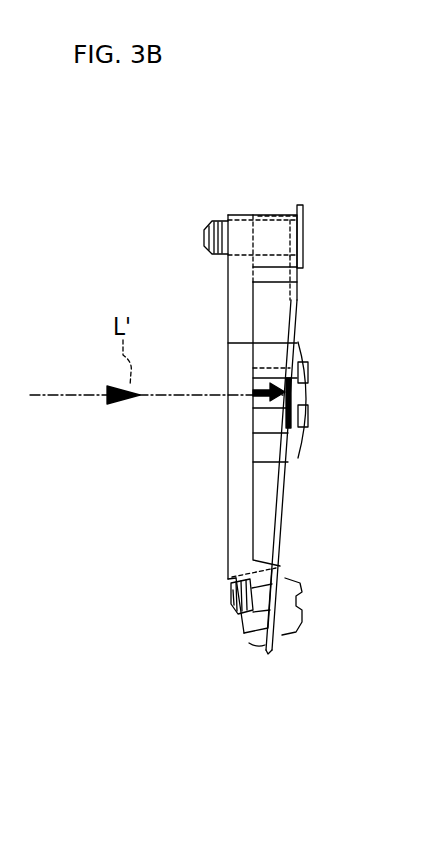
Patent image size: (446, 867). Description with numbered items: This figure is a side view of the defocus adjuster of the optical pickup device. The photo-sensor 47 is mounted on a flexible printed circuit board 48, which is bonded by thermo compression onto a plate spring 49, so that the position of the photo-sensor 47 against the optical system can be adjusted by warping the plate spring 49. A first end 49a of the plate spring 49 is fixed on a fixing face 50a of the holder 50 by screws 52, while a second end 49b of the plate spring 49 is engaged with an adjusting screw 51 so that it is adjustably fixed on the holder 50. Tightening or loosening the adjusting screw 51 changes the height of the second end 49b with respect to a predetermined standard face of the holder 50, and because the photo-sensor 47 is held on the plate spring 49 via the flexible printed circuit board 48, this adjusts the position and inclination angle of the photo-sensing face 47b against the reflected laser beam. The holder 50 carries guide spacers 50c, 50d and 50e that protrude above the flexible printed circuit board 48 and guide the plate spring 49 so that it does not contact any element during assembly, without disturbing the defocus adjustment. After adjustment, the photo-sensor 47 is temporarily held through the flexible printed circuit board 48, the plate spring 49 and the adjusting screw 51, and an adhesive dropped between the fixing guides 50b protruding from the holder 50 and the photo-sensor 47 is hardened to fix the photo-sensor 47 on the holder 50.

The photo-sensor 47 is at (308, 390).
The photo-sensing face 47b is at (262, 381).
The flexible printed circuit board 48 is at (303, 465).
The plate spring 49 is at (294, 530).
The first end of the plate spring 49a is at (272, 648).
The second end of the plate spring 49b is at (260, 216).
The holder 50 is at (238, 512).
The fixing face 50a is at (293, 594).
The fixing guides 50b is at (313, 351).
The guide spacer 50c is at (273, 243).
The guide spacer 50d is at (276, 315).
The guide spacer 50e is at (262, 452).
The adjusting screw 51 is at (297, 207).
The screws 52 is at (283, 622).